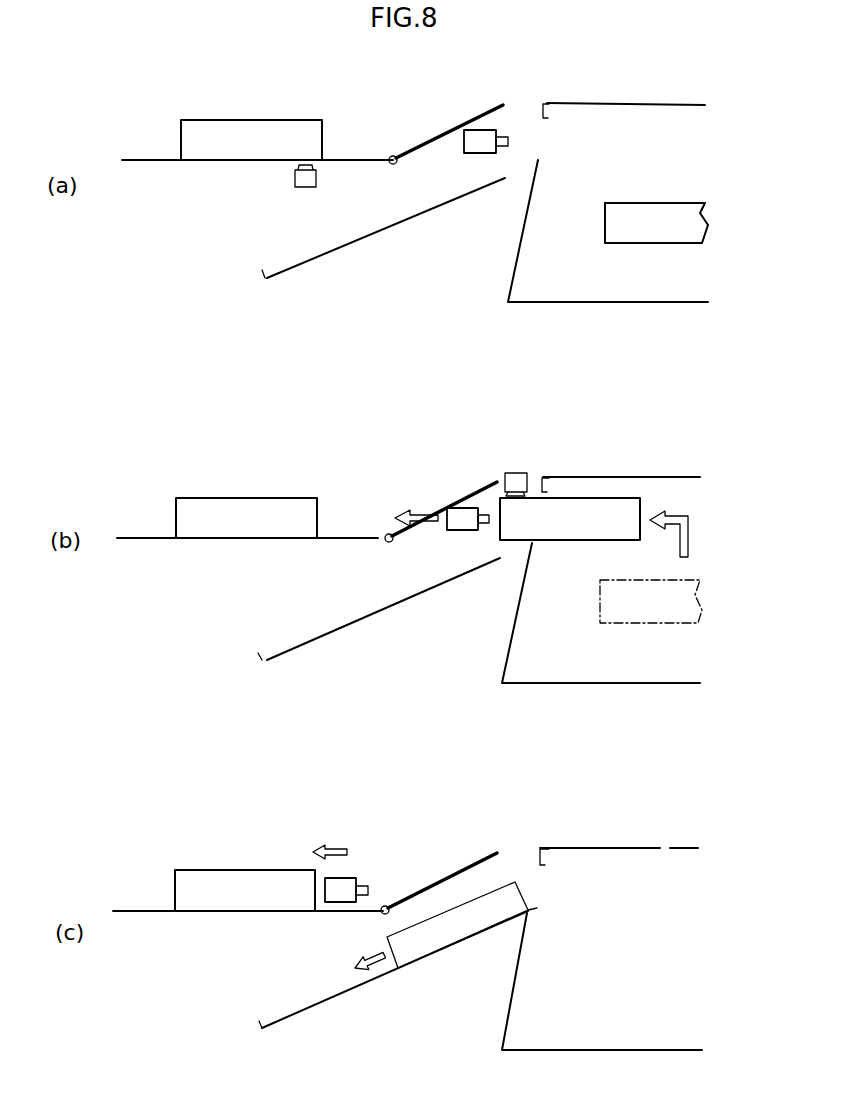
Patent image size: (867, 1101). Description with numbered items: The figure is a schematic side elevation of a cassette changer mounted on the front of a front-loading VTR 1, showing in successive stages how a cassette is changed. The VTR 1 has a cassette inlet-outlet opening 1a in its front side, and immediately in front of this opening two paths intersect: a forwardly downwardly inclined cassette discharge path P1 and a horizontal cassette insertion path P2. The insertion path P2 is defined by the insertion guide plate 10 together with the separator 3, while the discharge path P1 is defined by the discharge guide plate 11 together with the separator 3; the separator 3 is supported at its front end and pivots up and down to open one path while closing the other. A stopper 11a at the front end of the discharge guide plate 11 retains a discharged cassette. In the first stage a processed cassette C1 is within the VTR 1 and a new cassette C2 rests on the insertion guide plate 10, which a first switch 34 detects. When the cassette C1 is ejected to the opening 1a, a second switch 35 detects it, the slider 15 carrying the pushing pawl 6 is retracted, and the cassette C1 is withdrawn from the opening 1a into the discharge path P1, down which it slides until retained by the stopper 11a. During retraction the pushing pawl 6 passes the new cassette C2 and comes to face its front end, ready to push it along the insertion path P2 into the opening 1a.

The VTR 1 is at (661, 170).
The cassette inlet-outlet opening 1a is at (540, 140).
The separator 3 is at (437, 140).
The pushing pawl 6 is at (505, 148).
The insertion guide plate 10 is at (150, 161).
The discharge guide plate 11 is at (364, 240).
The stopper 11a is at (265, 279).
The slider 15 is at (477, 153).
The first switch 34 is at (295, 176).
The second switch 35 is at (522, 473).
The processed cassette C1 is at (645, 243).
The new cassette C2 is at (240, 120).
The cassette discharge path P1 is at (417, 187).
The cassette insertion path P2 is at (341, 137).